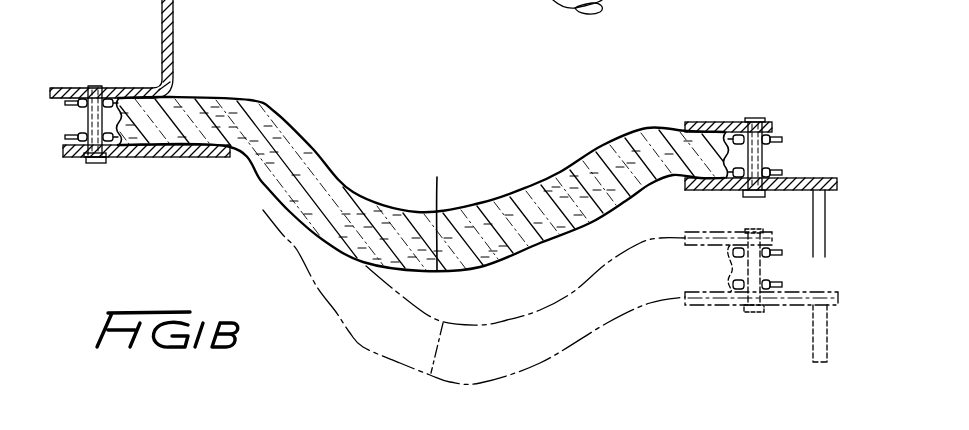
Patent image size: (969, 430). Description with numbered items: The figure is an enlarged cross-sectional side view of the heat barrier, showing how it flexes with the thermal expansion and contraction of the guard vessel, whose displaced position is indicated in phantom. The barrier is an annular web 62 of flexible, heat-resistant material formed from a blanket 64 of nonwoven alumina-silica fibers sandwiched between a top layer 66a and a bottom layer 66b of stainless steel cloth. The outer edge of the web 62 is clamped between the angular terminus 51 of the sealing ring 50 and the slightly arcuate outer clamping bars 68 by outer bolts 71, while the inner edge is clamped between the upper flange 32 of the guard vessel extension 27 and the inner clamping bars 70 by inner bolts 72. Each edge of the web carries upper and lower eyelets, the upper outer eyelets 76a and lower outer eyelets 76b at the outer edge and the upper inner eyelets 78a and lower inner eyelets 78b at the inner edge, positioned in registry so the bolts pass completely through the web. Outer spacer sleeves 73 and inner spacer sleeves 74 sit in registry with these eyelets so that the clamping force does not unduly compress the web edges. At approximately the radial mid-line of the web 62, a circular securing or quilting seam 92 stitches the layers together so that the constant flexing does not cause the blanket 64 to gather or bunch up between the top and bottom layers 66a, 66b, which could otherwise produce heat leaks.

The guard vessel extension 27 is at (814, 247).
The upper flange 32 is at (693, 191).
The sealing ring 50 is at (158, 5).
The angular terminus 51 is at (120, 94).
The annular web 62 is at (425, 218).
The blanket 64 is at (603, 162).
The top layer 66a is at (279, 112).
The bottom layer 66b is at (256, 179).
The outer clamping bars 68 is at (184, 158).
The inner clamping bars 70 is at (723, 122).
The outer bolts 71 is at (106, 160).
The inner bolts 72 is at (754, 198).
The outer spacer sleeves 73 is at (82, 113).
The inner spacer sleeves 74 is at (777, 155).
The upper outer eyelets 76a is at (80, 87).
The lower outer eyelets 76b is at (81, 162).
The upper inner eyelets 78a is at (774, 133).
The lower inner eyelets 78b is at (778, 170).
The securing or quilting seam 92 is at (447, 213).